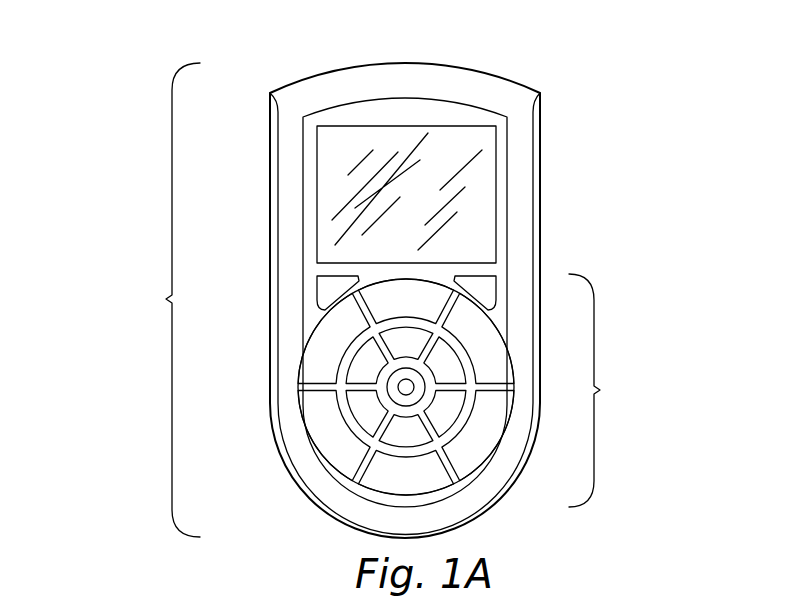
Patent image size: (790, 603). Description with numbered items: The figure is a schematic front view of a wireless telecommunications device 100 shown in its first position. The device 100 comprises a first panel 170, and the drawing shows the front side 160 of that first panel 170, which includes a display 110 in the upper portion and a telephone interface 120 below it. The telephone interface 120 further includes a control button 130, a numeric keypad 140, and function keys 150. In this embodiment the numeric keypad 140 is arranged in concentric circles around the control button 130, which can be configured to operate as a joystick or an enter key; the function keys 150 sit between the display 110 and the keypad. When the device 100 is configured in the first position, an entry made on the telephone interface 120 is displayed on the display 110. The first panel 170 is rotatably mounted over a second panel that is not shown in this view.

The wireless telecommunications device 100 is at (152, 60).
The display 110 is at (335, 195).
The telephone interface 120 is at (417, 390).
The control button 130 is at (404, 389).
The numeric keypad 140 is at (325, 357).
The function keys 150 is at (333, 285).
The front side 160 is at (517, 129).
The first panel 170 is at (164, 300).